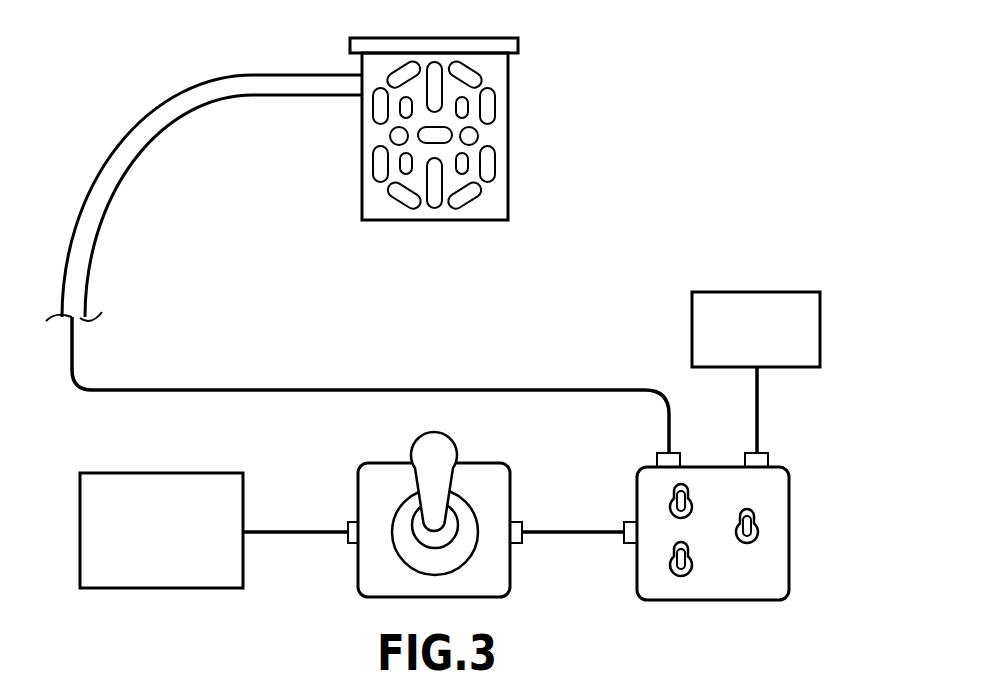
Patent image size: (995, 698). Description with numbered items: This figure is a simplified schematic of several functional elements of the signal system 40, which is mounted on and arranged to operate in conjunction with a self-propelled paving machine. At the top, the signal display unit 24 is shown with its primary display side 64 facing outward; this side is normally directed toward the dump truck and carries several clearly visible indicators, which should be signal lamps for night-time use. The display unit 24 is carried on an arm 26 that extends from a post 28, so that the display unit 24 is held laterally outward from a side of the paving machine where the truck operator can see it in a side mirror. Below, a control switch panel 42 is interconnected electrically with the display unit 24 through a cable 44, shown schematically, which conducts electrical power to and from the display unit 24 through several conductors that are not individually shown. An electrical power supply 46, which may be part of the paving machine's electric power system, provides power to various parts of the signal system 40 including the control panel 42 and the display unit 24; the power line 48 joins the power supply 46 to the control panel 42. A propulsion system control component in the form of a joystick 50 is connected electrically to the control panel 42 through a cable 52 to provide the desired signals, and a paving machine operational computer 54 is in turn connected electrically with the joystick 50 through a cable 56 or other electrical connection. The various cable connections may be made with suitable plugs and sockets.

The signal display unit 24 is at (433, 220).
The primary display side 64 is at (493, 133).
The arm 26 is at (310, 75).
The post 28 is at (86, 290).
The signal system 40 is at (643, 224).
The control switch panel 42 is at (790, 530).
The cable 44 is at (372, 389).
The electrical power supply 46 is at (757, 292).
The power cable 48 is at (759, 408).
The joystick 50 is at (441, 433).
The cable 52 is at (575, 530).
The paving machine operational computer 54 is at (163, 473).
The cable 56 is at (297, 530).